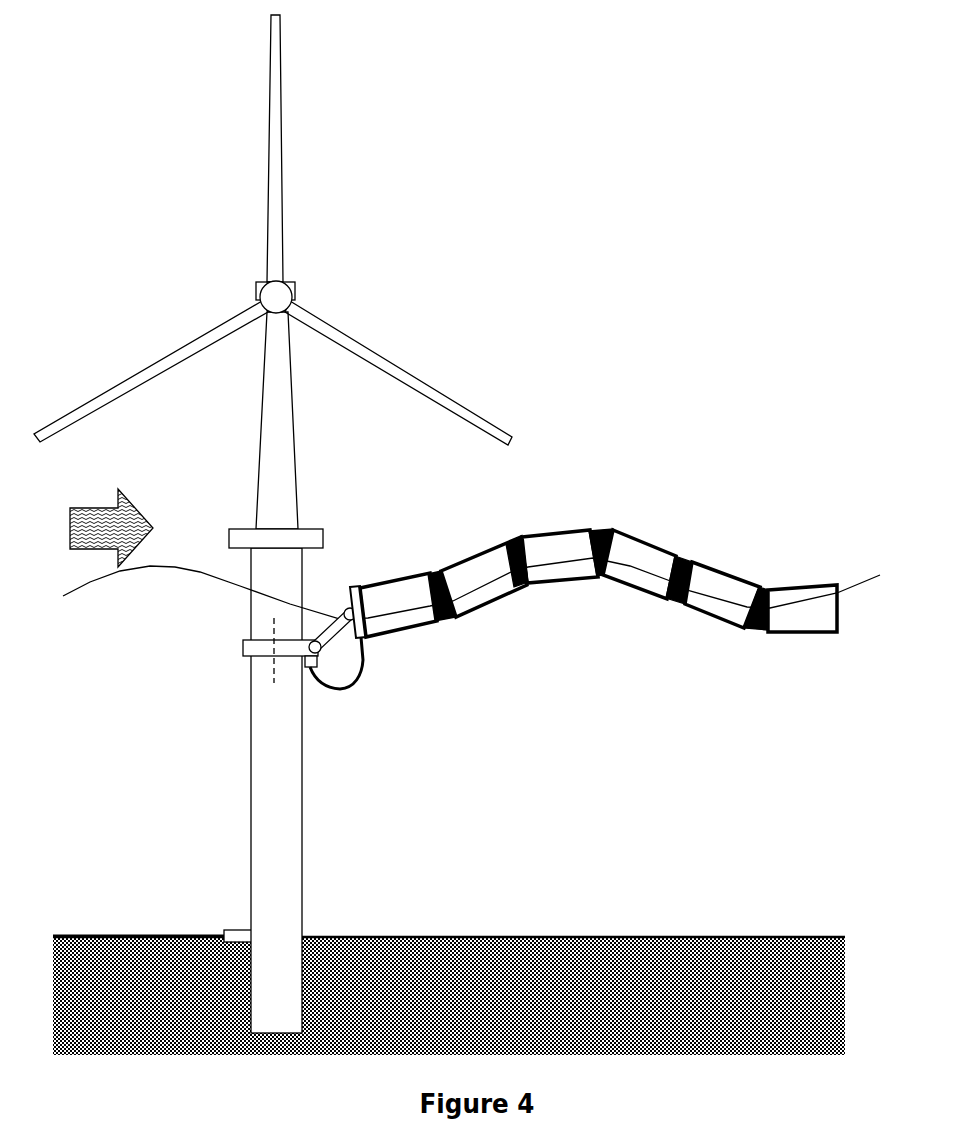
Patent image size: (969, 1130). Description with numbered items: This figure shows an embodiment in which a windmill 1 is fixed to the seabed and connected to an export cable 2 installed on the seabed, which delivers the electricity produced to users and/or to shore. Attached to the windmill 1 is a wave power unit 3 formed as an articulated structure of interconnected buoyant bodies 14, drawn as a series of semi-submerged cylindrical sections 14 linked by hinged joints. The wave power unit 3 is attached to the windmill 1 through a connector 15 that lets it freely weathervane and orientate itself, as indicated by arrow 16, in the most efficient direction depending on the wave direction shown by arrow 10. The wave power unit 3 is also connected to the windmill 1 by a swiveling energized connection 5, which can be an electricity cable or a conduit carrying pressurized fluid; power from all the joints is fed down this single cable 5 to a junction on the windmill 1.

The windmill 1 is at (278, 443).
The export cable 2 is at (120, 937).
The wave power unit 3 is at (593, 556).
The energized connection 5 is at (360, 678).
The wave direction arrow 10 is at (111, 522).
The buoyant bodies 14 is at (559, 546).
The connector 15 is at (258, 653).
The weathervaning arrow 16 is at (243, 653).